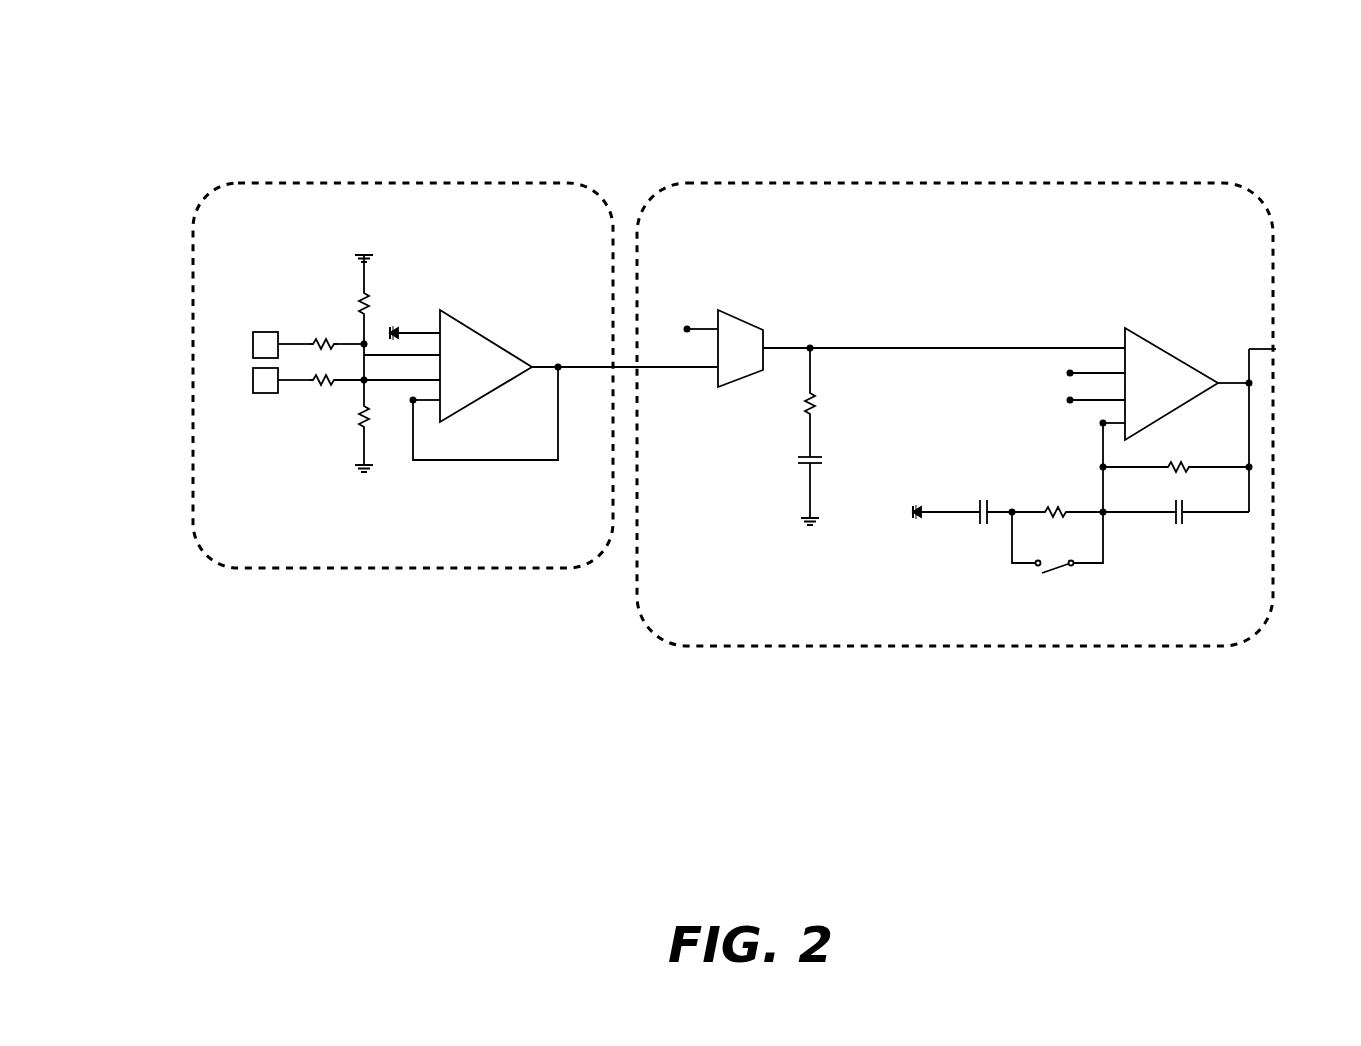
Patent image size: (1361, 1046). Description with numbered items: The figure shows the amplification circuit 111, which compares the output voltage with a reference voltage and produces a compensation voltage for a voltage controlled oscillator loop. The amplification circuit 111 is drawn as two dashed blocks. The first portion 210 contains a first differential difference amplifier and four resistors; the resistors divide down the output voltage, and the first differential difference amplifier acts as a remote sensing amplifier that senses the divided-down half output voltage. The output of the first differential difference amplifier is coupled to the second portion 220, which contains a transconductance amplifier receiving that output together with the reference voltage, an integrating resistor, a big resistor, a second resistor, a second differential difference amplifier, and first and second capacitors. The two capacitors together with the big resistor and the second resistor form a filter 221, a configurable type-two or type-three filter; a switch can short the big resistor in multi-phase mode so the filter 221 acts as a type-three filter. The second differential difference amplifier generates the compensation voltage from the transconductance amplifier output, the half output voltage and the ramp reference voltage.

The amplification circuit 111 is at (250, 108).
The first portion 210 is at (542, 183).
The second portion 220 is at (1038, 183).
The filter 221 is at (1137, 543).